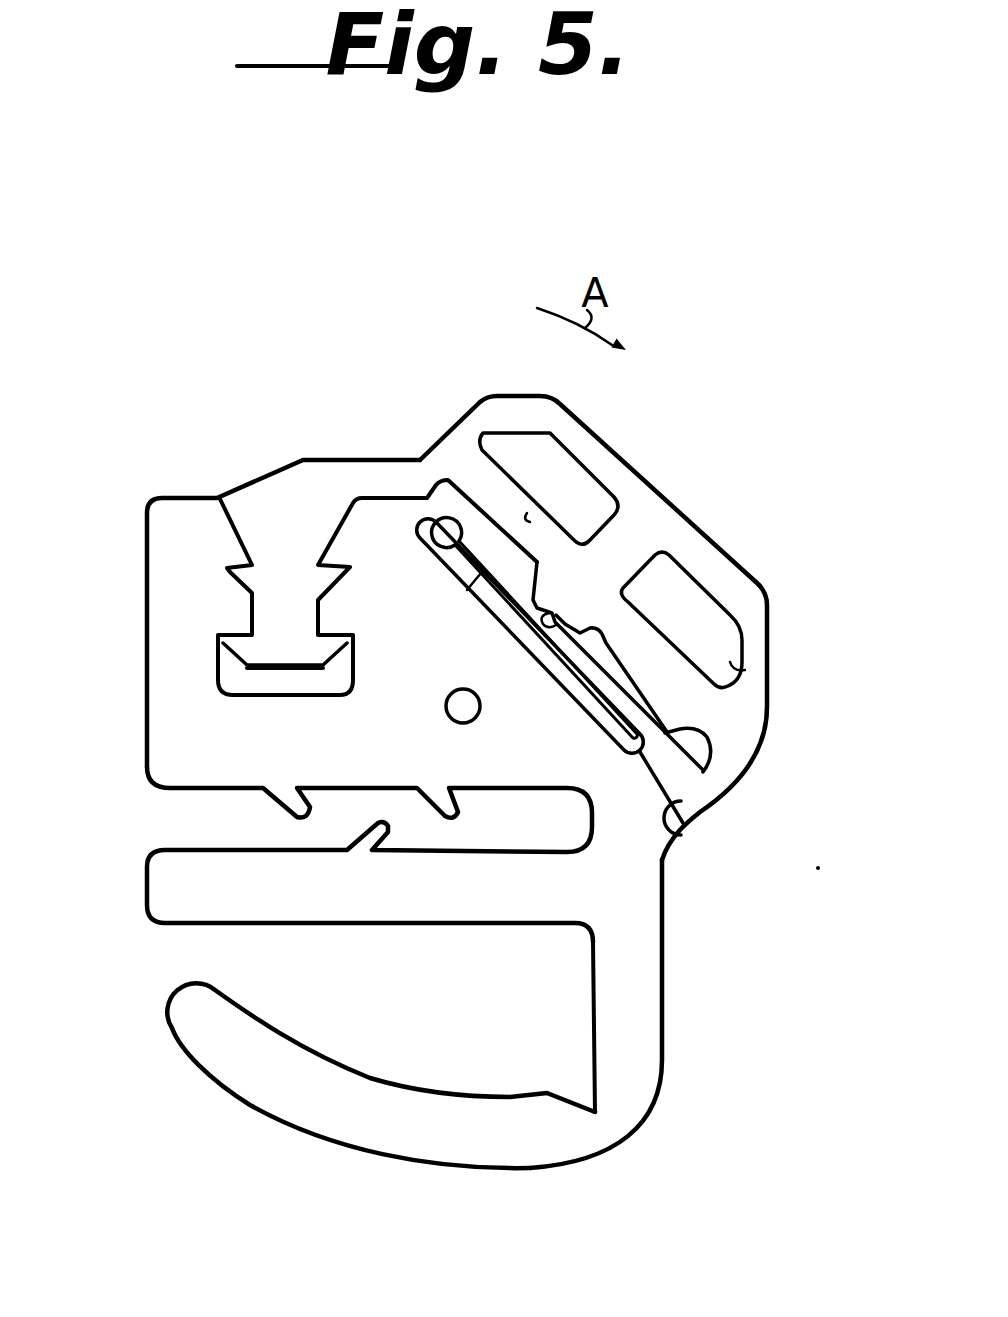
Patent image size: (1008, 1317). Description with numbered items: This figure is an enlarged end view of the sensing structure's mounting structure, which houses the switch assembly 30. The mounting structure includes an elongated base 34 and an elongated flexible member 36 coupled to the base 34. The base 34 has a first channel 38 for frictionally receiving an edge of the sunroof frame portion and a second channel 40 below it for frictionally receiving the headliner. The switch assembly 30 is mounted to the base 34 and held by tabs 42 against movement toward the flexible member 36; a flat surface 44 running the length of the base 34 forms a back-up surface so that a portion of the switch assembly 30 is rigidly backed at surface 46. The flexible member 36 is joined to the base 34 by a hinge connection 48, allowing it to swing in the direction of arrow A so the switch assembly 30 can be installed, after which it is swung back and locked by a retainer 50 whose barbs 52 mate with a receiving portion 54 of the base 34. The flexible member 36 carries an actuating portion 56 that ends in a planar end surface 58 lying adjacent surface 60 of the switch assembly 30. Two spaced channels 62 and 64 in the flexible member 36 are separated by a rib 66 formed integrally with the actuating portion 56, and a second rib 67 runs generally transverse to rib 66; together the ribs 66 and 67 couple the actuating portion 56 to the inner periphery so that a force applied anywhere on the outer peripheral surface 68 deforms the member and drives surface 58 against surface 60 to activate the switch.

The switch assembly 30 is at (494, 563).
The elongated base 34 is at (675, 996).
The elongated flexible member 36 is at (780, 638).
The first channel 38 is at (515, 842).
The second channel 40 is at (440, 1093).
The tabs 42 is at (433, 530).
The flat surface 44 is at (553, 648).
The surface 46 is at (467, 590).
The hinge connection 48 is at (675, 831).
The retainer 50 is at (247, 510).
The barbs 52 is at (247, 590).
The receiving portion 54 is at (240, 575).
The actuating portion 56 is at (678, 560).
The planar end surface 58 is at (550, 613).
The surface of the switch assembly 60 is at (522, 568).
The channel 62 is at (745, 670).
The channel 64 is at (500, 450).
The rib 66 is at (617, 500).
The rib 67 is at (527, 513).
The outer peripheral surface 68 is at (760, 585).